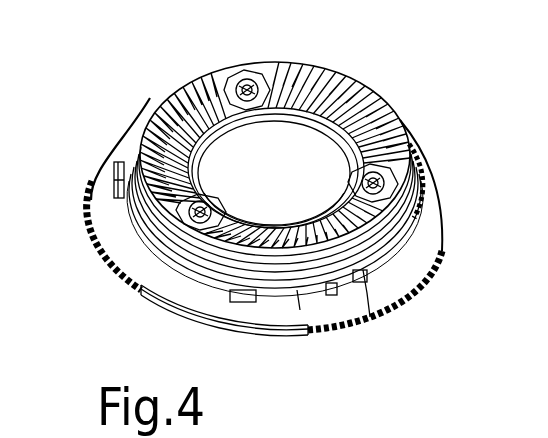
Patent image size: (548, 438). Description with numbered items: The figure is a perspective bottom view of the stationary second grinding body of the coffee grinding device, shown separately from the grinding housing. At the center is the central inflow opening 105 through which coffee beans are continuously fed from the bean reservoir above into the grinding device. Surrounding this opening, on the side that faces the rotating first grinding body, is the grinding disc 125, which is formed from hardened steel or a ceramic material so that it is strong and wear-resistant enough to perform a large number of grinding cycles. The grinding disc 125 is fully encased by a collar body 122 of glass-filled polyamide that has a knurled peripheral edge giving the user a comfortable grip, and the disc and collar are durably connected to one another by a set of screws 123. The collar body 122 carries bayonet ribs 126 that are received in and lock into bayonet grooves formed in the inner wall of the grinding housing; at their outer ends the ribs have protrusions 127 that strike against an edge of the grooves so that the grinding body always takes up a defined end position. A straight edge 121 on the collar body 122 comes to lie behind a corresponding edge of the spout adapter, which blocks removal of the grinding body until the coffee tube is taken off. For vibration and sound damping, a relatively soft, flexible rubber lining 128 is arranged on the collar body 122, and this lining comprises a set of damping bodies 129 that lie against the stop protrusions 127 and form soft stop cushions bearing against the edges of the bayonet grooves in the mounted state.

The central inflow opening 105 is at (302, 195).
The straight edge 121 is at (200, 313).
The collar body 122 is at (433, 227).
The screws 123 is at (233, 83).
The grinding disc 125 is at (368, 82).
The bayonet ribs 126 is at (297, 295).
The protrusions 127 is at (96, 226).
The flexible lining 128 is at (121, 276).
The damping bodies 129 is at (113, 180).